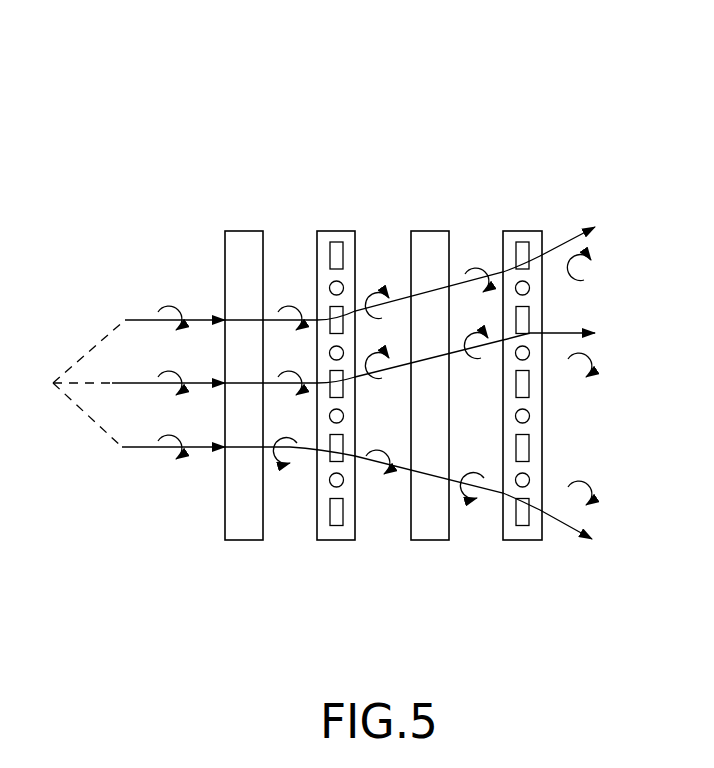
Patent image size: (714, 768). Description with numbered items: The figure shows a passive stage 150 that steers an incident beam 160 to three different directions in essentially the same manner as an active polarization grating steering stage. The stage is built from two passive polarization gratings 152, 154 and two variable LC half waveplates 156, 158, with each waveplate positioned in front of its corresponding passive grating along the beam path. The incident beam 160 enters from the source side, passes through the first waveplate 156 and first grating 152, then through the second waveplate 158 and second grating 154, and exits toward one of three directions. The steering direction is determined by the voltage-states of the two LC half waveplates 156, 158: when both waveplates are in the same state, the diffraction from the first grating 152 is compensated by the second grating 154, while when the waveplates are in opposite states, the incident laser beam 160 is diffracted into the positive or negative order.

The passive stage 150 is at (190, 114).
The passive polarization grating 152 is at (335, 231).
The passive polarization grating 154 is at (523, 231).
The variable LC half waveplate 156 is at (250, 540).
The variable LC half waveplate 158 is at (430, 540).
The incident beam 160 is at (93, 348).